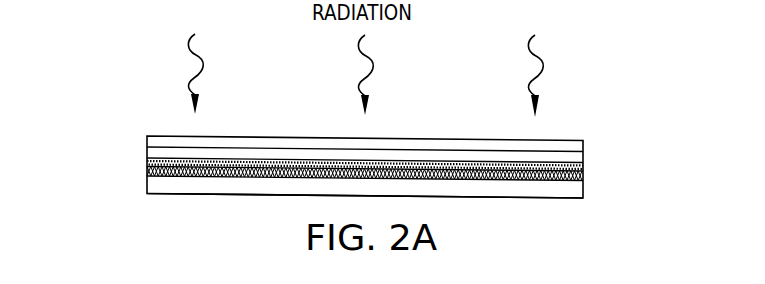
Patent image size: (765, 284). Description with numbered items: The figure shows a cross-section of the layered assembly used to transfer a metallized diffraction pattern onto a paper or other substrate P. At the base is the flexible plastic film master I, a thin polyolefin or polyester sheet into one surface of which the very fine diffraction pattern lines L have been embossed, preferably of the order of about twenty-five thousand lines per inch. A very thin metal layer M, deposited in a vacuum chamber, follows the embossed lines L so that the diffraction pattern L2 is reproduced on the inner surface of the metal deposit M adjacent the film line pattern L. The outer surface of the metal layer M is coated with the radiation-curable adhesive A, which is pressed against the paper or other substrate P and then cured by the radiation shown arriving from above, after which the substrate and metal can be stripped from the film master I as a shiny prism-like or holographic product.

The paper or other substrate P is at (160, 122).
The radiation-curable adhesive A is at (133, 141).
The metal layer M is at (132, 163).
The diffraction pattern L2 is at (552, 147).
The diffraction pattern lines L is at (555, 205).
The film master I is at (181, 210).